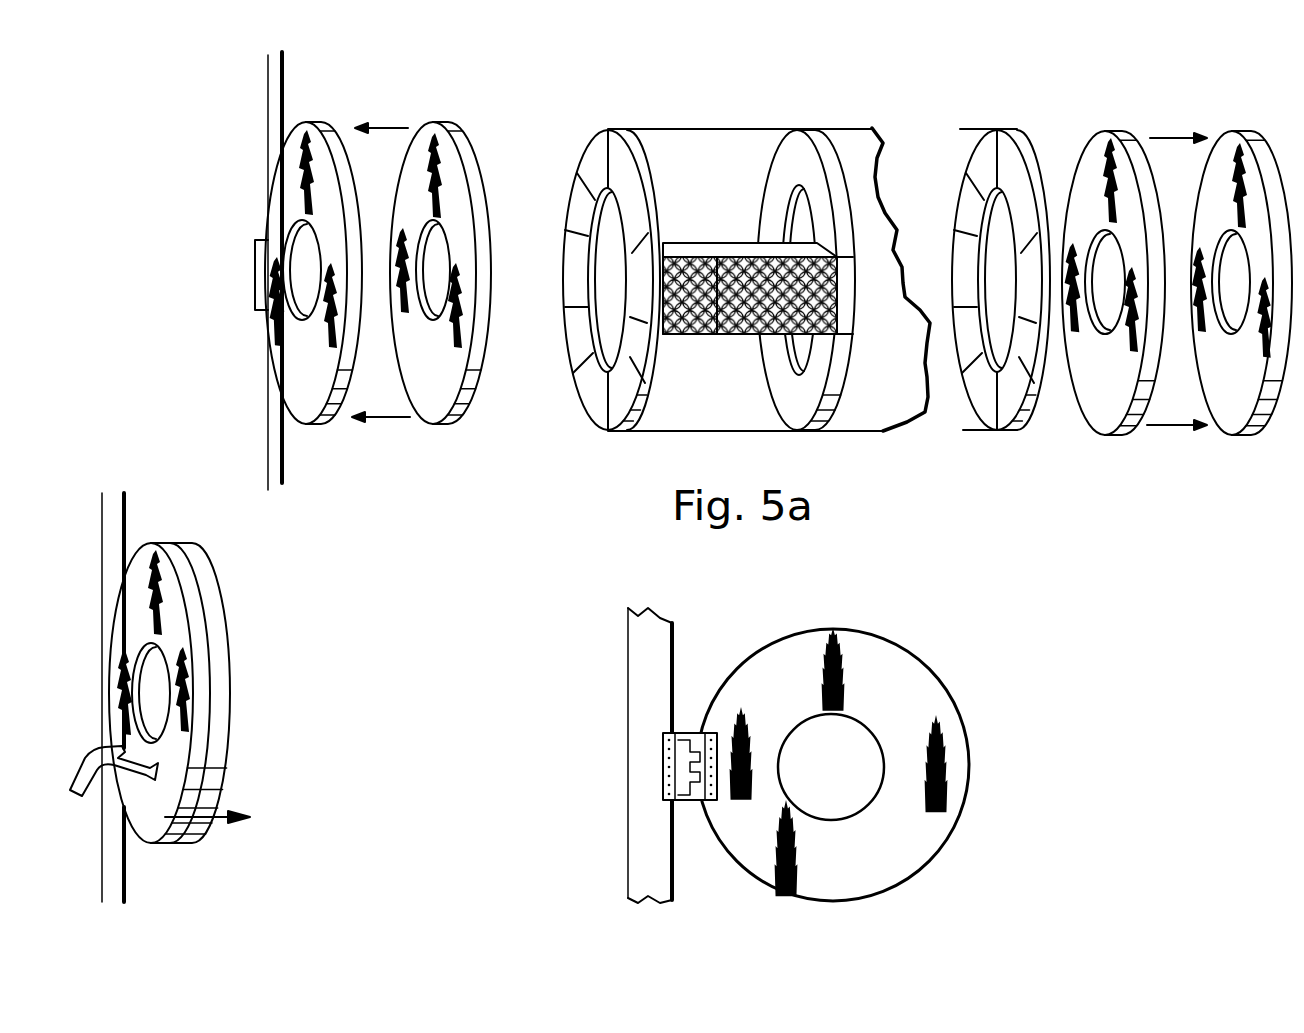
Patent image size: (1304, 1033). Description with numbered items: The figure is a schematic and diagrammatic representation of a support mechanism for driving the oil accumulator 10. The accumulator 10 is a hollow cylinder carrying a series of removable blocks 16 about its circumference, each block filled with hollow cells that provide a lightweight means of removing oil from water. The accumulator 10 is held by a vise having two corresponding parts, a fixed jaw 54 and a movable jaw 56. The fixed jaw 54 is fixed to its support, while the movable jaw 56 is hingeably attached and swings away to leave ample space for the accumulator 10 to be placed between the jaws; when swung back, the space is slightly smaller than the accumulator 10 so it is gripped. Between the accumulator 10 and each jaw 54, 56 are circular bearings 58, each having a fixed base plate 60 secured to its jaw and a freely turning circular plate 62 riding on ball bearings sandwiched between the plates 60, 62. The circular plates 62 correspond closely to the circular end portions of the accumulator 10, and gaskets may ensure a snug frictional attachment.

The oil accumulator 10 is at (880, 117).
The removable blocks 16 is at (715, 240).
The fixed jaw 54 is at (390, 110).
The movable jaw 56 is at (1191, 117).
The circular bearings 58 is at (418, 438).
The fixed base plate 60 is at (318, 407).
The freely turning circular plate 62 is at (447, 371).